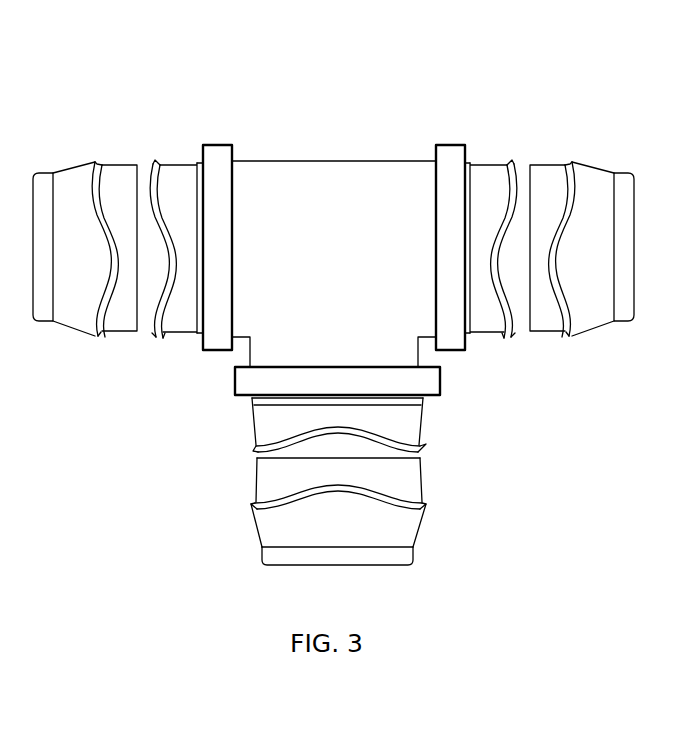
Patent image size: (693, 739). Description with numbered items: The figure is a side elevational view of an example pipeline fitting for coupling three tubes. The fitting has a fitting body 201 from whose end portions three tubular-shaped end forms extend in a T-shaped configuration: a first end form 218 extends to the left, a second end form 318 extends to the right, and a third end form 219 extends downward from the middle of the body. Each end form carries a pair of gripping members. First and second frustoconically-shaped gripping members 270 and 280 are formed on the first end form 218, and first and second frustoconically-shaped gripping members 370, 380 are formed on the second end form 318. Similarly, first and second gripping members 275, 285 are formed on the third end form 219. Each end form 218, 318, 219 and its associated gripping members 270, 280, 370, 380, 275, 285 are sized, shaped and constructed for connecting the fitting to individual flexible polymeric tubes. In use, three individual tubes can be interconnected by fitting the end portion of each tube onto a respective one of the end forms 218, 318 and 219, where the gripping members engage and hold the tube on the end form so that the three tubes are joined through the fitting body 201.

The fitting body 201 is at (271, 183).
The first tubular-shaped end form 218 is at (114, 352).
The third tubular-shaped end form 219 is at (441, 539).
The first frustoconically-shaped gripping member 270 is at (58, 172).
The first gripping member 275 is at (257, 528).
The second frustoconically-shaped gripping member 280 is at (143, 170).
The second gripping member 285 is at (258, 447).
The second tubular-shaped end form 318 is at (552, 84).
The first frustoconically-shaped gripping member 370 is at (588, 312).
The second frustoconically-shaped gripping member 380 is at (525, 333).